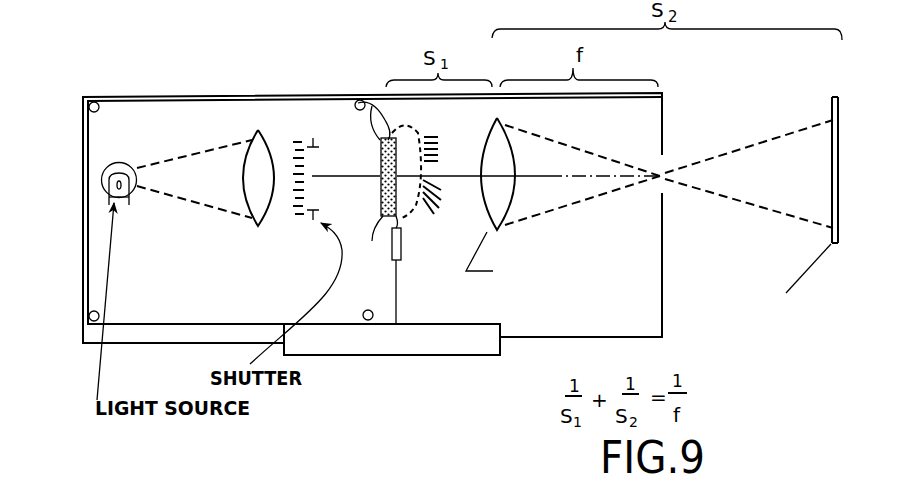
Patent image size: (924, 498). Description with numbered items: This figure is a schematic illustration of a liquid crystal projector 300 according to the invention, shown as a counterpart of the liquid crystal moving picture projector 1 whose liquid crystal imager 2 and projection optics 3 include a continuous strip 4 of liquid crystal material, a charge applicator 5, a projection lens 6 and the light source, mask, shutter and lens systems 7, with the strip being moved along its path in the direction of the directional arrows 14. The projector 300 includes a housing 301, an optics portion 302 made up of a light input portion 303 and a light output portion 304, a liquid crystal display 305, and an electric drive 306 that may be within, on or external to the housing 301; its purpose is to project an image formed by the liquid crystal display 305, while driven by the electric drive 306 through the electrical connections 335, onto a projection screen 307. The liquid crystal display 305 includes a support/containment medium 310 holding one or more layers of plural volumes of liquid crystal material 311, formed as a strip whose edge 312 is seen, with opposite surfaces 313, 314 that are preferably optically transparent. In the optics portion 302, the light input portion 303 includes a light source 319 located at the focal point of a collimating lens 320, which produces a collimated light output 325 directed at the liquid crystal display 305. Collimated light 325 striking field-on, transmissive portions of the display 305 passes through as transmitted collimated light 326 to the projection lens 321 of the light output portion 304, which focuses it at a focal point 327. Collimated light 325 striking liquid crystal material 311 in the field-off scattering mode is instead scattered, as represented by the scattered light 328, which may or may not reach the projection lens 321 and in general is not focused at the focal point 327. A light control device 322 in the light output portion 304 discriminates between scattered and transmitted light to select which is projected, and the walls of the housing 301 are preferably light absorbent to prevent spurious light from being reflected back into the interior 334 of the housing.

The liquid crystal moving picture projector 1 is at (115, 44).
The liquid crystal imager 2 is at (403, 305).
The projection optics 3 is at (248, 70).
The continuous strip 4 is at (158, 323).
The charge applicator 5 is at (404, 235).
The projection lens 6 is at (579, 108).
The light source, mask, shutter and lens systems 7 is at (180, 125).
The directional arrows 14 is at (262, 311).
The liquid crystal projector 300 is at (360, 358).
The housing 301 is at (545, 338).
The optics portion 302 is at (206, 275).
The light input portion 303 is at (351, 108).
The light output portion 304 is at (603, 144).
The liquid crystal display 305 is at (368, 102).
The electric drive 306 is at (437, 357).
The projection screen 307 is at (830, 240).
The support/containment medium 310 is at (383, 224).
The liquid crystal material 311 is at (380, 204).
The edge 312 is at (380, 186).
The surface 313 is at (380, 144).
The surface 314 is at (404, 135).
The light source 319 is at (116, 163).
The collimating lens 320 is at (257, 136).
The projection lens 321 is at (506, 207).
The light control device 322 is at (672, 188).
The collimated light output 325 is at (304, 128).
The transmitted collimated light 326 is at (457, 133).
The focal point 327 is at (668, 172).
The scattered light 328 is at (433, 220).
The interior 334 is at (547, 224).
The electrical connections 335 is at (389, 289).